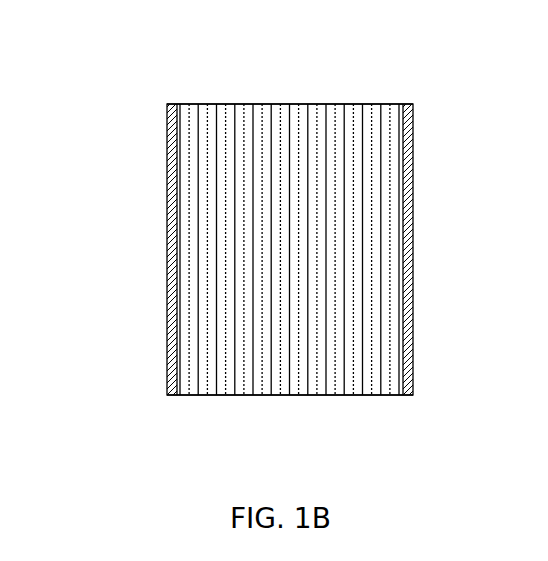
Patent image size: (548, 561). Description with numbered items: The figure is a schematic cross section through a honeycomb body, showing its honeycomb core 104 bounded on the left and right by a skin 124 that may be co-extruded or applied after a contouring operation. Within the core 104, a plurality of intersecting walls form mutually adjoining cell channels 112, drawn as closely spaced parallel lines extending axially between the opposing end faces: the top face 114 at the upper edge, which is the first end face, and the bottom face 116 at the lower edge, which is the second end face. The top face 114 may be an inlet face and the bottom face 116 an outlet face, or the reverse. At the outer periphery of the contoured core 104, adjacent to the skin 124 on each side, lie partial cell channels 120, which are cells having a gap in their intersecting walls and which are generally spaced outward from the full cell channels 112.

The honeycomb core 104 is at (320, 90).
The cell channel 112 is at (193, 198).
The top face 114 is at (280, 103).
The bottom face 116 is at (265, 395).
The partial cell channel 120 is at (181, 235).
The skin 124 is at (167, 312).